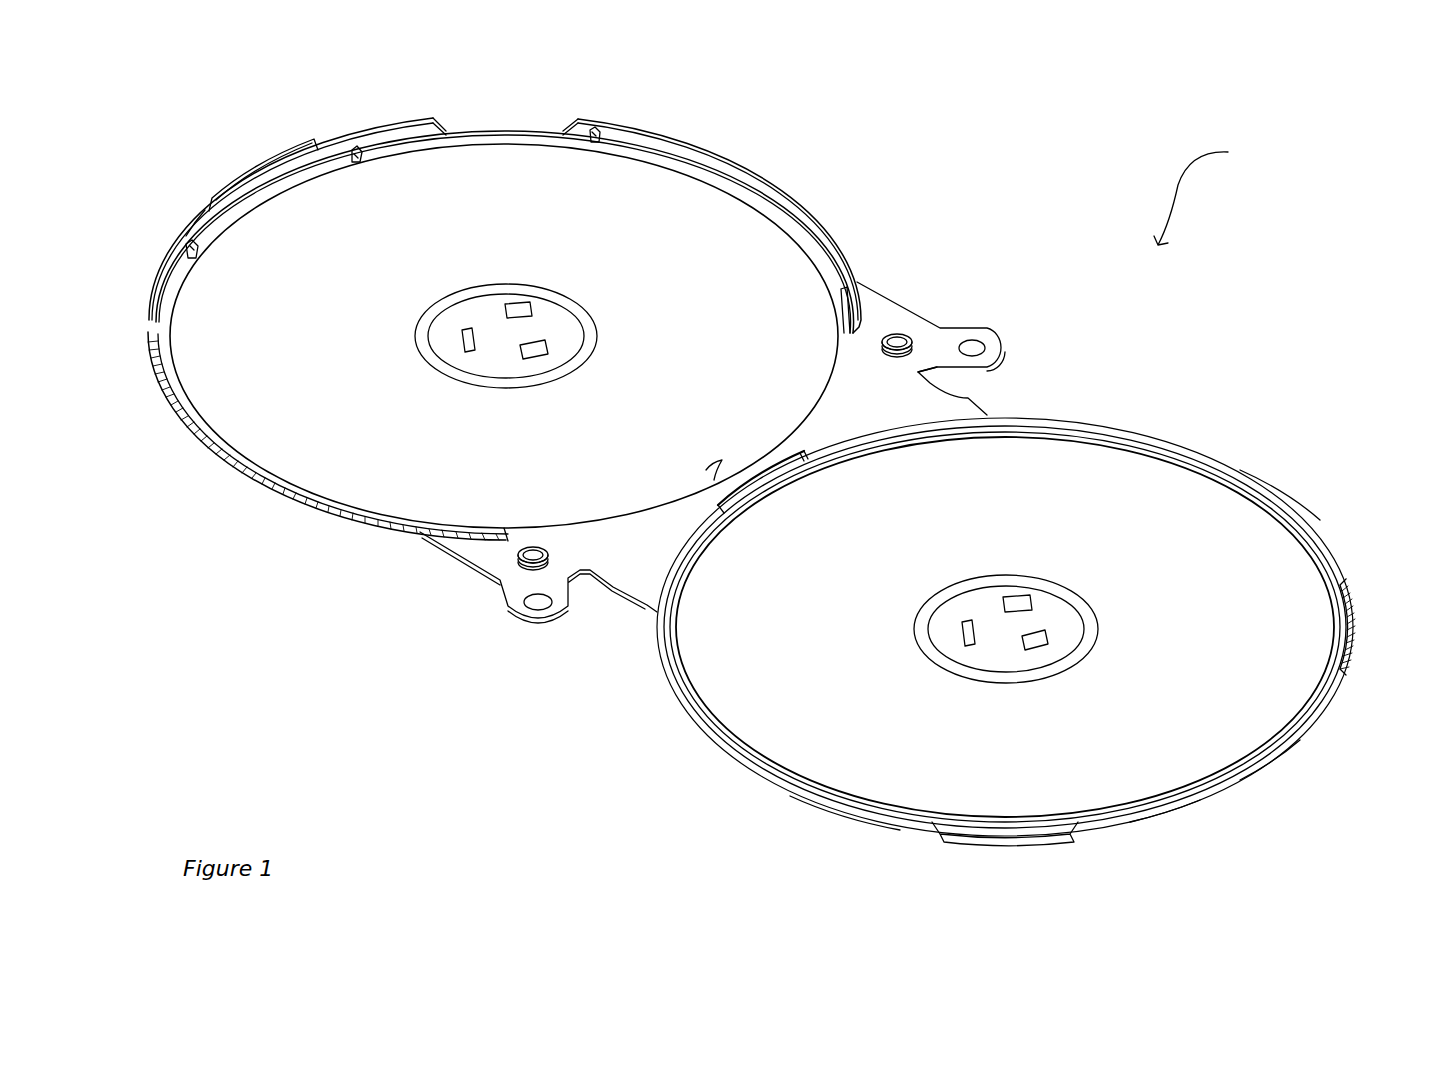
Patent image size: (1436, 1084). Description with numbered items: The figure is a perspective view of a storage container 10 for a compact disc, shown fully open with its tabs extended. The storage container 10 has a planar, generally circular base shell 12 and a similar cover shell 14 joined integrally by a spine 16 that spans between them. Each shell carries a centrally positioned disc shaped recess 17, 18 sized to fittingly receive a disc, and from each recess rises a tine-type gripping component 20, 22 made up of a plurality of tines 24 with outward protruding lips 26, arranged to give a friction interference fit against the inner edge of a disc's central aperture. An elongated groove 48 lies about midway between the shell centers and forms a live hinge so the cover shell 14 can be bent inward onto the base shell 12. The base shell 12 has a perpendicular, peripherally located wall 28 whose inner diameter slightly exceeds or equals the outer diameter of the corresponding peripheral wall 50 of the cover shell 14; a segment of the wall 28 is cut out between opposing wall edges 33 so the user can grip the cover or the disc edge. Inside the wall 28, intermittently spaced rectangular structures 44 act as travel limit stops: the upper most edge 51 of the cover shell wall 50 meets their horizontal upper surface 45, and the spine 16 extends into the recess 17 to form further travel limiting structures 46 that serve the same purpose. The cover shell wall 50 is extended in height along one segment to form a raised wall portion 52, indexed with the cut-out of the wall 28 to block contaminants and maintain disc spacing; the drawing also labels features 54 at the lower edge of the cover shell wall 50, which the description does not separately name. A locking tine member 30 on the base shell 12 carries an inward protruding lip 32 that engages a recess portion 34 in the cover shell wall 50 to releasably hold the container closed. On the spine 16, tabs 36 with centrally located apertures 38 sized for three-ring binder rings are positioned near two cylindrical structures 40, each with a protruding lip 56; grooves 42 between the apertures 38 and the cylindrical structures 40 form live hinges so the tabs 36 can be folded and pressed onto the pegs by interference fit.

The storage container 10 is at (1206, 195).
The base shell 12 is at (838, 240).
The cover shell 14 is at (1172, 434).
The spine 16 is at (660, 567).
The disc shaped recess 17 is at (740, 240).
The disc shaped recess 18 is at (1074, 472).
The gripping component 20 is at (545, 325).
The gripping component 22 is at (1046, 614).
The tines 24 is at (505, 312).
The outward protruding lips 26 is at (460, 338).
The wall 28 is at (610, 122).
The locking tine member 30 is at (233, 186).
The inward protruding lip 32 is at (270, 176).
The wall edges 33 is at (440, 126).
The recess portion 34 is at (1238, 786).
The tabs 36 is at (958, 326).
The apertures 38 is at (985, 345).
The cylindrical structures 40 is at (900, 330).
The grooves 42 is at (932, 376).
The rectangular structures 44 is at (358, 158).
The horizontal upper surface 45 is at (190, 246).
The travel limiting structures 46 is at (860, 372).
The elongated groove 48 is at (588, 576).
The wall 50 is at (842, 812).
The upper most edge 51 is at (1254, 480).
The raised wall portion 52 is at (1360, 616).
The rim tab 54 is at (942, 830).
The protruding lip 56 is at (908, 332).